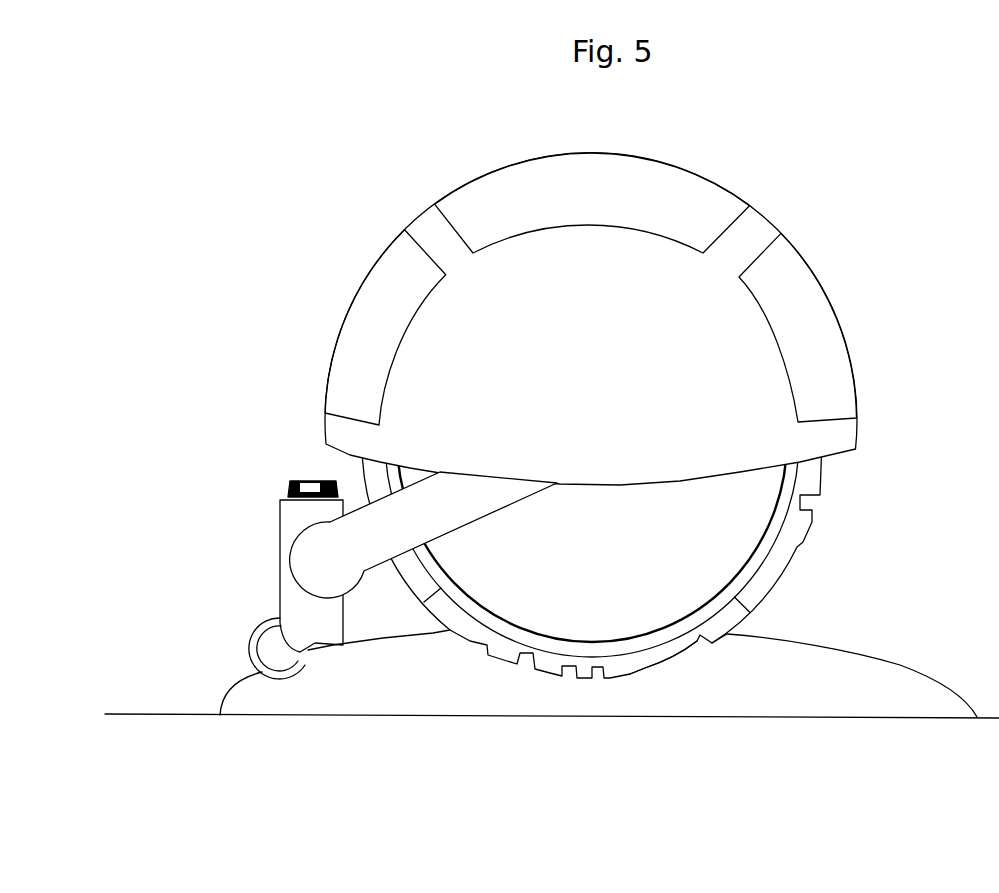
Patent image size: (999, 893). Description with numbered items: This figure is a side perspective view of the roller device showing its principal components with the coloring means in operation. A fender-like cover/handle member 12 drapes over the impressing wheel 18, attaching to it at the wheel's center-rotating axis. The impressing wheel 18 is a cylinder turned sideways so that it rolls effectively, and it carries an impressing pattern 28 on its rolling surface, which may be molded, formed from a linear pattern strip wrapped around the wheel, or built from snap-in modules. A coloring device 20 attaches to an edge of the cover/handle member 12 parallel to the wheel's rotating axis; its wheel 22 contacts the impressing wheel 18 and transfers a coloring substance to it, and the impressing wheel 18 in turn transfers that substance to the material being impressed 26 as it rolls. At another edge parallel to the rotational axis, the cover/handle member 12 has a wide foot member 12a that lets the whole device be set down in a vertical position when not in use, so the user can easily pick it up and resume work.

The cover/handle member 12 is at (698, 330).
The foot member 12a is at (856, 398).
The impressing wheel 18 is at (687, 535).
The coloring device 20 is at (280, 612).
The wheel 22 is at (250, 648).
The material being impressed 26 is at (843, 685).
The impressing pattern 28 is at (628, 670).